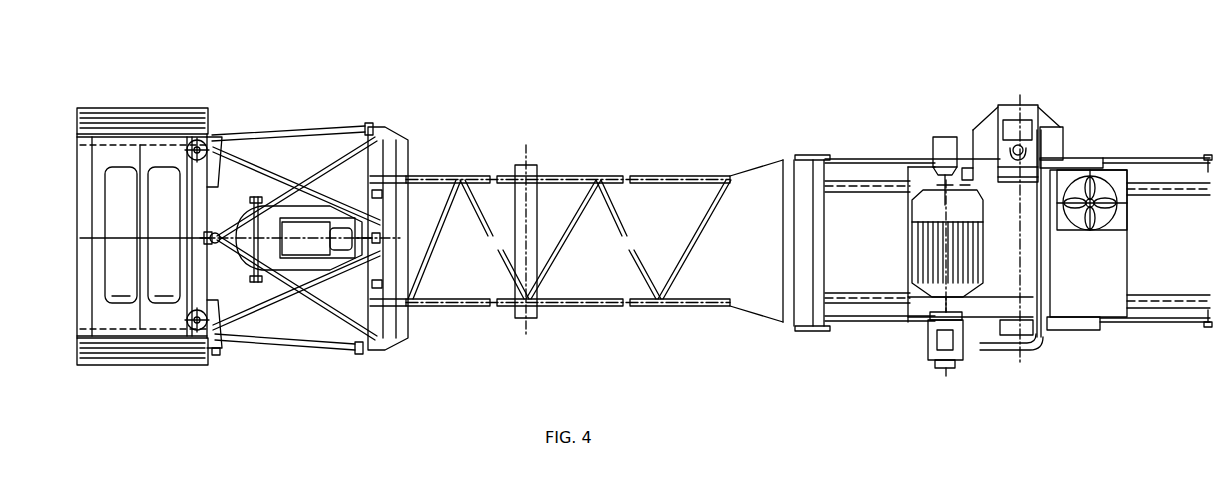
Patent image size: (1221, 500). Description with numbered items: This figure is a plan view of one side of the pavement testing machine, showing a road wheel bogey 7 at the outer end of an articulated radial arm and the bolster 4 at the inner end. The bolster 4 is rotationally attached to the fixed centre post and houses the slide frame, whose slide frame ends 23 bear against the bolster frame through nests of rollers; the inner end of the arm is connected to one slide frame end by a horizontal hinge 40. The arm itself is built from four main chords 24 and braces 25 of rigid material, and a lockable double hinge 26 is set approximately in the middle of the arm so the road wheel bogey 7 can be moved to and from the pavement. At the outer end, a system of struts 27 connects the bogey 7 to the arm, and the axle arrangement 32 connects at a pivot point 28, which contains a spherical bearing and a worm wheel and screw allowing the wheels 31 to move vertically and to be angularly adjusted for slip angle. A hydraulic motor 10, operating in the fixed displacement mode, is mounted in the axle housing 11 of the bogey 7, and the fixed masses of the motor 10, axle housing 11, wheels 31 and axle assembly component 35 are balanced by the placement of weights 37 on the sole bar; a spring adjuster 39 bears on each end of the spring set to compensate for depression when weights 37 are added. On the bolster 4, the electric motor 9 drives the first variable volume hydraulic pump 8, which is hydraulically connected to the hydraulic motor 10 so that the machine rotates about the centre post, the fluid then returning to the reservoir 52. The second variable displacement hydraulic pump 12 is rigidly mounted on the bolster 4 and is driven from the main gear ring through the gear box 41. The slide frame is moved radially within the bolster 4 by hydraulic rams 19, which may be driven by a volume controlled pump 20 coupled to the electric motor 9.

The bolster 4 is at (1023, 290).
The road wheel bogey 7 is at (188, 172).
The first variable volume hydraulic pump 8 is at (955, 353).
The electric motor 9 is at (930, 290).
The hydraulic motor 10 is at (323, 237).
The axle housing 11 is at (243, 213).
The second variable displacement hydraulic pump 12 is at (1012, 125).
The hydraulic rams 19 is at (1087, 395).
The volume controlled pump 20 is at (937, 135).
The slide frame ends 23 is at (835, 170).
The main chords 24 is at (617, 176).
The braces 25 is at (638, 255).
The lockable double hinge 26 is at (533, 167).
The struts 27 is at (308, 207).
The pivot point 28 is at (380, 237).
The wheels 31 is at (162, 172).
The axle arrangement 32 is at (212, 278).
The axle assembly component 35 is at (275, 233).
The weights 37 is at (193, 108).
The spring adjuster 39 is at (213, 347).
The horizontal hinges 40 is at (800, 156).
The gear box 41 is at (1055, 132).
The reservoir 52 is at (1103, 305).